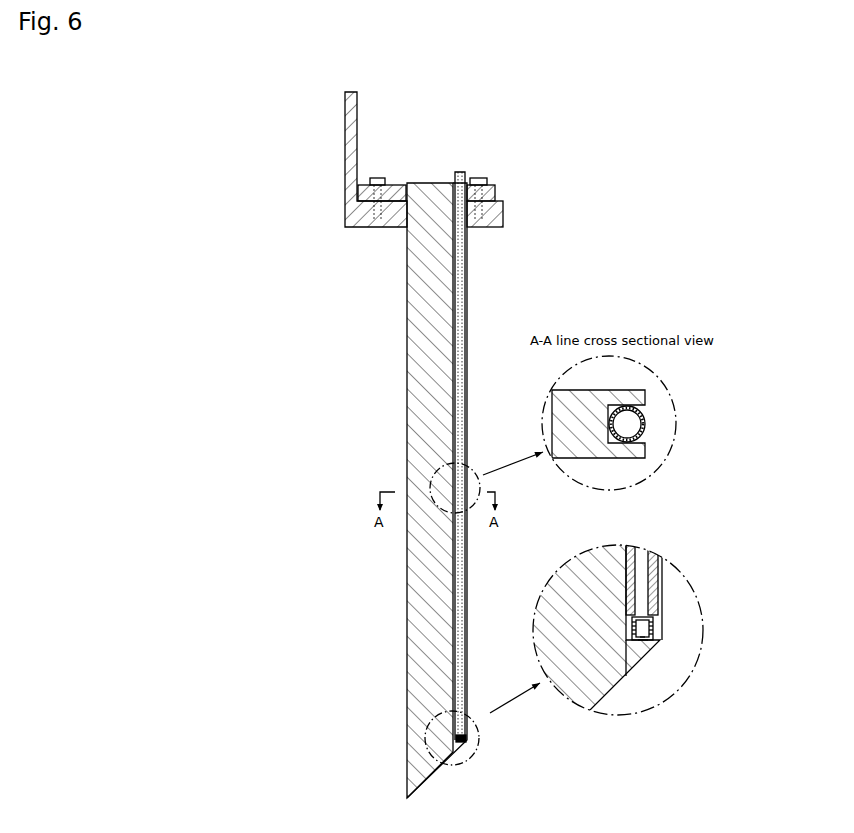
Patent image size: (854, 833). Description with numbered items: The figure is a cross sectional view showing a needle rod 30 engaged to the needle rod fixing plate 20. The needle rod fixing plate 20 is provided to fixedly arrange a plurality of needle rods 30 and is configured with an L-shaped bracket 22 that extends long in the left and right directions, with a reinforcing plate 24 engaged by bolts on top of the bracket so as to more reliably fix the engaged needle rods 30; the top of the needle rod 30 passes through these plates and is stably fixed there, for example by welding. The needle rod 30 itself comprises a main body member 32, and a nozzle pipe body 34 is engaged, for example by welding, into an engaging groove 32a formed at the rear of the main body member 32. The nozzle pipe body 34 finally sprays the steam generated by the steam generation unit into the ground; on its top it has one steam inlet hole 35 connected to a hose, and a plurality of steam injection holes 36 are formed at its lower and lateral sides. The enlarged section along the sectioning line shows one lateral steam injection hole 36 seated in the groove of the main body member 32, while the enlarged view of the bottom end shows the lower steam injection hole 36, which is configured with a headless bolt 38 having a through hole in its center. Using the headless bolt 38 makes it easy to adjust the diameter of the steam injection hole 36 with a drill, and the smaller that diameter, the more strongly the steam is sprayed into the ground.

The needle rod fixing plate 20 is at (352, 205).
The L-shaped bracket 22 is at (490, 216).
The reinforcing plate 24 is at (493, 192).
The needle rod 30 is at (411, 434).
The main body member 32 is at (416, 586).
The engaging groove 32a is at (665, 573).
The nozzle pipe body 34 is at (460, 593).
The steam inlet hole 35 is at (458, 172).
The steam injection hole 36 is at (466, 480).
The headless bolt 38 is at (645, 641).